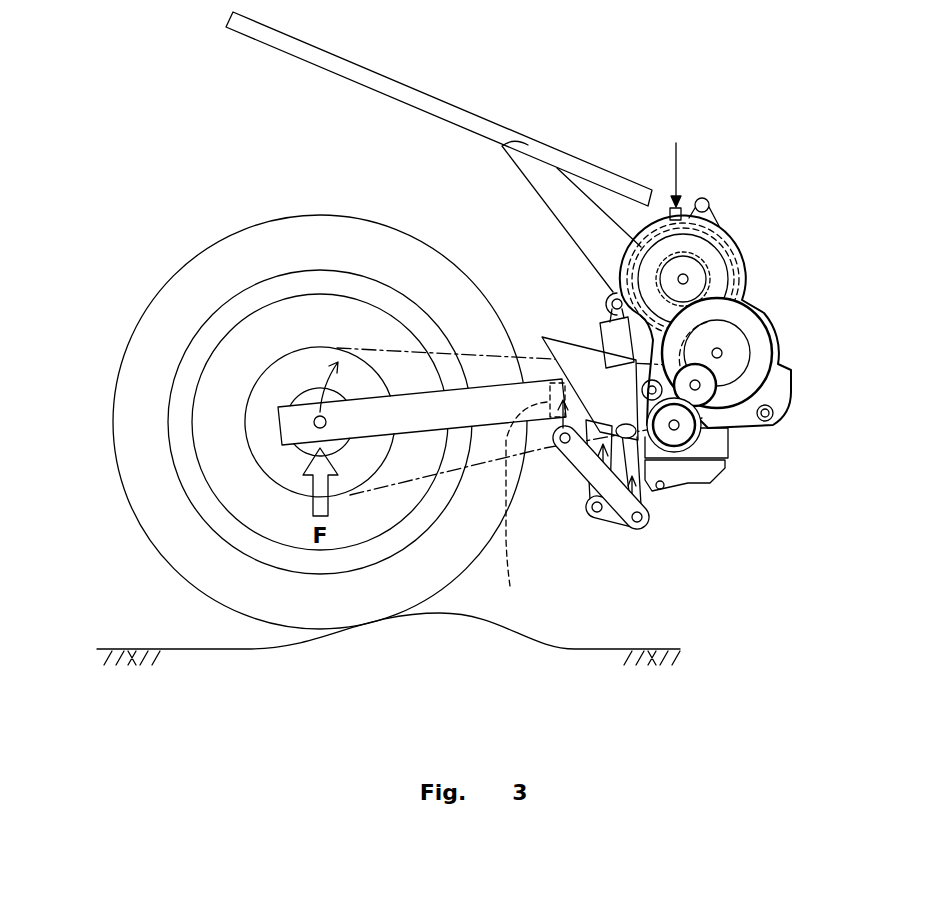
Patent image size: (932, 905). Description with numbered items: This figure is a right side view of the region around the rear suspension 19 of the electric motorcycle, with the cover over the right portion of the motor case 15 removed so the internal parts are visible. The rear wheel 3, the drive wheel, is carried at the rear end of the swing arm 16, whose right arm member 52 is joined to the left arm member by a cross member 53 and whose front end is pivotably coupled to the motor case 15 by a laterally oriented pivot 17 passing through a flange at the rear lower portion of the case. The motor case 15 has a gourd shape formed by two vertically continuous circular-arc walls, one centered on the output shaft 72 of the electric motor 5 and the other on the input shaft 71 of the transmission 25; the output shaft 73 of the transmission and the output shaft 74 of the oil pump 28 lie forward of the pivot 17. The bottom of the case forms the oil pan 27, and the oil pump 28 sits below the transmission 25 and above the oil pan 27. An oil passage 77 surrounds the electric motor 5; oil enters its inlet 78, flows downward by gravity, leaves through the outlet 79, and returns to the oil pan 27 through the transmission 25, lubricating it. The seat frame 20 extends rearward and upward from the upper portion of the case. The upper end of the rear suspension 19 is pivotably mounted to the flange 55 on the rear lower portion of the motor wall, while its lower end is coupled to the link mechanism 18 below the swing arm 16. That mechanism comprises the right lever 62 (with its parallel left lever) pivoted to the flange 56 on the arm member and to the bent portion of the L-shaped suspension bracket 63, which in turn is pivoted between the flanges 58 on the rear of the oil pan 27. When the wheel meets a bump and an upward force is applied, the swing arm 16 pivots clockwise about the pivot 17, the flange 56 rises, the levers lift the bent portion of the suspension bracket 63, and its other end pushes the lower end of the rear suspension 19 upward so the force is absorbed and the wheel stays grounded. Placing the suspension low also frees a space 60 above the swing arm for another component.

The rear wheel 3 is at (247, 598).
The electric motor 5 is at (704, 272).
The motor case 15 is at (790, 405).
The swing arm 16 is at (277, 433).
The pivot 17 is at (708, 433).
The link mechanism 18 is at (608, 540).
The rear suspension 19 is at (607, 337).
The seat frame 20 is at (277, 43).
The transmission 25 is at (773, 371).
The oil pan 27 is at (703, 478).
The oil pump 28 is at (690, 438).
The arm member 52 is at (412, 433).
The cross member 53 is at (519, 506).
The flange 55 is at (613, 296).
The flange 56 is at (531, 422).
The flange 58 is at (669, 487).
The space 60 is at (533, 212).
The right lever 62 is at (641, 527).
The suspension bracket 63 is at (613, 516).
The input shaft 71 is at (720, 352).
The output shaft 72 is at (685, 278).
The output shaft 73 is at (700, 388).
The output shaft 74 is at (702, 442).
The oil passage 77 is at (745, 250).
The inlet 78 is at (682, 212).
The outlet 79 is at (707, 322).